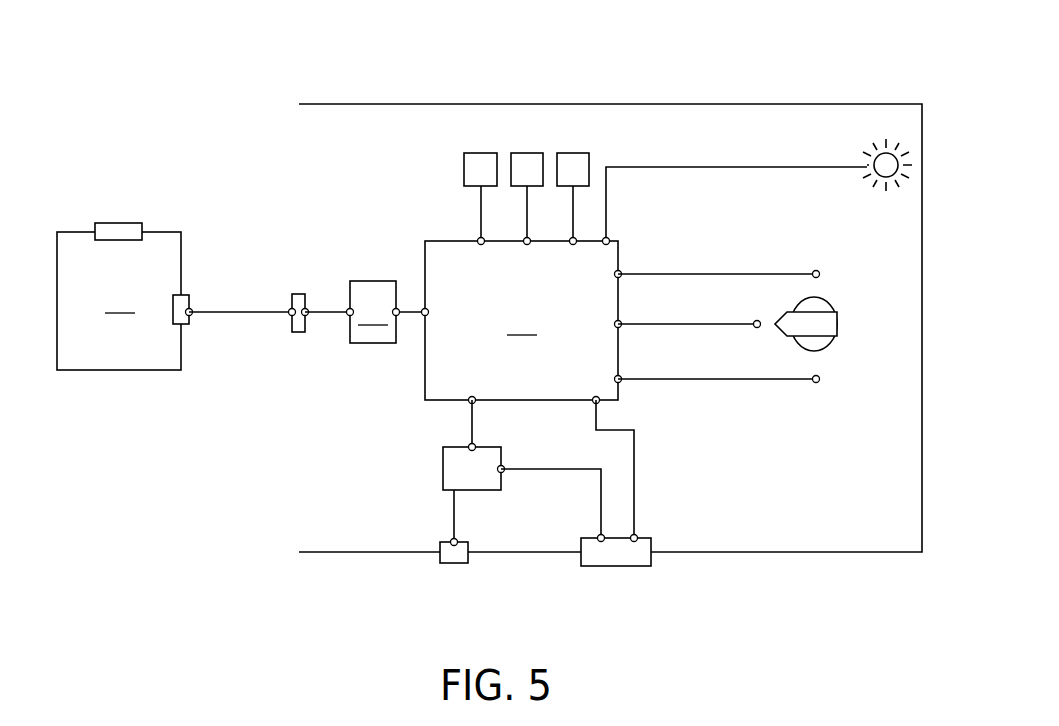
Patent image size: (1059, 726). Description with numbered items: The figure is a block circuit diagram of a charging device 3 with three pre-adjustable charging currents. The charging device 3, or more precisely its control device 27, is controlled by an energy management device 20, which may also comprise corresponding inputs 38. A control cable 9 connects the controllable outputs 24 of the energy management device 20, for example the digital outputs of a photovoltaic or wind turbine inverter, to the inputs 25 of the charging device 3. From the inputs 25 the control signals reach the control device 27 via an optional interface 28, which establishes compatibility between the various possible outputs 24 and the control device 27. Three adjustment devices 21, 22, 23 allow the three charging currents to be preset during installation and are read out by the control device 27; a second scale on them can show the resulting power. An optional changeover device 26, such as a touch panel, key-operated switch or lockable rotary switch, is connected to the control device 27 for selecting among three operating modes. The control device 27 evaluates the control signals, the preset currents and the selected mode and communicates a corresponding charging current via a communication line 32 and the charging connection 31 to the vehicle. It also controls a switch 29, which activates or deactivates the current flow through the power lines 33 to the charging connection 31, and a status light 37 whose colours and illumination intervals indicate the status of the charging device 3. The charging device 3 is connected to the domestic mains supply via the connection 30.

The charging device 3 is at (355, 103).
The control cable 9 is at (229, 315).
The energy management device 20 is at (119, 301).
The adjustment device 21 is at (482, 152).
The adjustment device 22 is at (528, 152).
The adjustment device 23 is at (574, 152).
The outputs 24 is at (192, 303).
The inputs 25 is at (295, 292).
The changeover device 26 is at (838, 325).
The control device 27 is at (522, 321).
The interface 28 is at (365, 312).
The switch 29 is at (443, 469).
The connection 30 is at (455, 567).
The charging connection 31 is at (617, 568).
The communication line 32 is at (634, 502).
The power lines 33 is at (535, 477).
The status light 37 is at (883, 150).
The inputs 38 is at (118, 222).